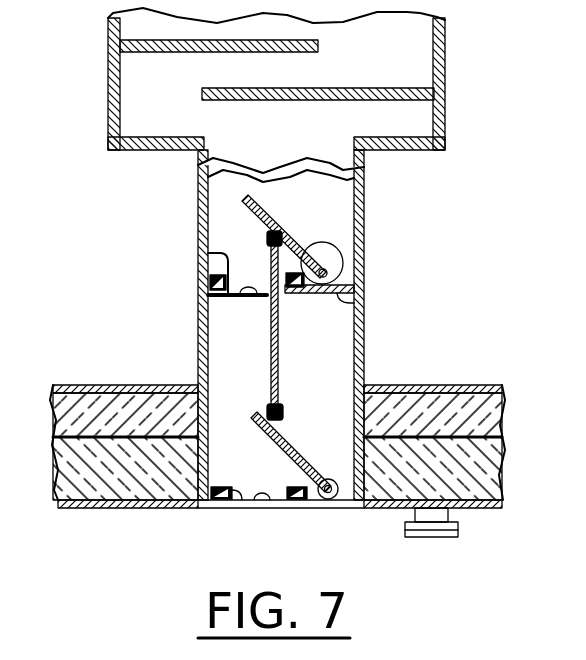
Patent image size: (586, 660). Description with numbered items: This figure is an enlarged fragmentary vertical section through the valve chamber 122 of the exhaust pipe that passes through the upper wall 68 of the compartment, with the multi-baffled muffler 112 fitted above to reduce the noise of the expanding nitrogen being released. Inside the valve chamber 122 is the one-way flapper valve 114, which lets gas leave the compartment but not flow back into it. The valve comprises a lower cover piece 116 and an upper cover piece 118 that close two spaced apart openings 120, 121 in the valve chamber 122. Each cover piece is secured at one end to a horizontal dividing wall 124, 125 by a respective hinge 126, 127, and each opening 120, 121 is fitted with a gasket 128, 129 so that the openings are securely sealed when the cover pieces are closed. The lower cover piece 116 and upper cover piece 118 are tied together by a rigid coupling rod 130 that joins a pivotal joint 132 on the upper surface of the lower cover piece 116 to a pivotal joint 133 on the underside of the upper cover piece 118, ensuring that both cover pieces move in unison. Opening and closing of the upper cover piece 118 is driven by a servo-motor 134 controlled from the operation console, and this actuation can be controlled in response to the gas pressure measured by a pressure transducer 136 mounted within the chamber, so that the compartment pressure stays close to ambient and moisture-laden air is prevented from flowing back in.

The multi-baffled muffler 112 is at (108, 77).
The valve chamber 122 is at (364, 317).
The upper wall 68 is at (107, 508).
The one-way flapper valve 114 is at (282, 513).
The pressure transducer 136 is at (460, 530).
The rigid coupling rod 130 is at (271, 348).
The pivotal joint 133 is at (268, 236).
The upper cover piece 118 is at (292, 242).
The servo-motor 134 is at (338, 245).
The hinge 127 is at (340, 263).
The horizontal dividing wall 125 is at (358, 297).
The gasket 129 is at (208, 253).
The opening 121 is at (240, 290).
The lower cover piece 116 is at (258, 413).
The pivotal joint 132 is at (298, 413).
The hinge 126 is at (337, 480).
The gasket 128 is at (234, 500).
The opening 120 is at (262, 500).
The horizontal dividing wall 124 is at (308, 500).